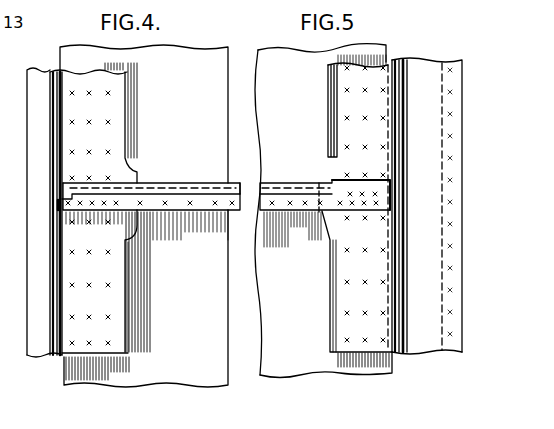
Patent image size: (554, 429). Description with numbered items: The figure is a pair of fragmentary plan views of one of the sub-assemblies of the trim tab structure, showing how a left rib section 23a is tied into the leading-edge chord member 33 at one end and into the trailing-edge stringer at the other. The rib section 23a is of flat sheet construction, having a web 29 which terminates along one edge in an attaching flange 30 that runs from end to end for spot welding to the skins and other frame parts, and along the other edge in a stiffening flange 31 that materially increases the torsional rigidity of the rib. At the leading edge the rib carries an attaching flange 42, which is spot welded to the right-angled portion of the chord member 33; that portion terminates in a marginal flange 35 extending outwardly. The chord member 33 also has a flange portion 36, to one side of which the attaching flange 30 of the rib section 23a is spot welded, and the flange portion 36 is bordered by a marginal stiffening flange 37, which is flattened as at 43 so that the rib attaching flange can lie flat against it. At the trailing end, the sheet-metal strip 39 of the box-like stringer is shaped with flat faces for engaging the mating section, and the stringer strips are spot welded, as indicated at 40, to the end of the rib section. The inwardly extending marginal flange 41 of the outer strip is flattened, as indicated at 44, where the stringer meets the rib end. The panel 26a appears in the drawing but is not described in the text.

In FIG. 4, the wall panel 26a is at (144, 216).
In FIG. 5, the wall panel 26a is at (318, 372).
In FIG. 4, the left rib section 23a is at (168, 183).
In FIG. 5, the left rib section 23a is at (300, 183).
In FIG. 5, the web 29 is at (364, 182).
In FIG. 4, the attaching flange 30 is at (230, 212).
In FIG. 4, the stiffening flange 31 is at (232, 183).
In FIG. 4, the chord member 33 is at (43, 358).
In FIG. 4, the marginal flange 35 is at (33, 321).
In FIG. 4, the flange portion 36 is at (128, 354).
In FIG. 4, the marginal stiffening flange 37 is at (125, 327).
In FIG. 5, the stringer strip 39 is at (433, 139).
In FIG. 5, the spot weld 40 is at (450, 200).
In FIG. 5, the marginal flange 41 is at (328, 99).
In FIG. 4, the attaching flange 42 is at (56, 205).
In FIG. 4, the flattened portion 43 is at (129, 175).
In FIG. 5, the flattened portion 44 is at (318, 175).